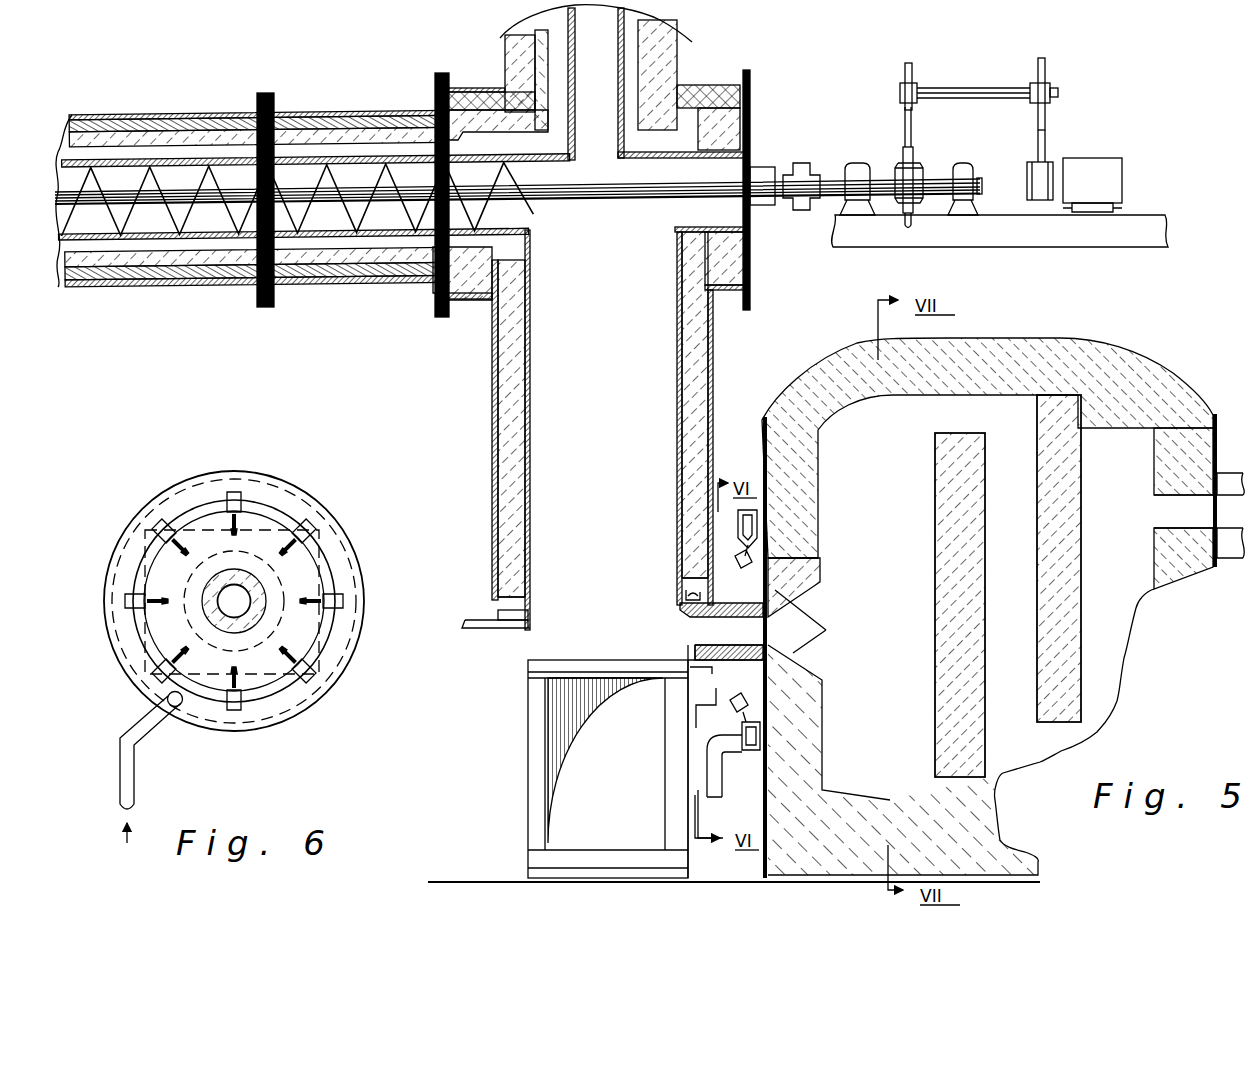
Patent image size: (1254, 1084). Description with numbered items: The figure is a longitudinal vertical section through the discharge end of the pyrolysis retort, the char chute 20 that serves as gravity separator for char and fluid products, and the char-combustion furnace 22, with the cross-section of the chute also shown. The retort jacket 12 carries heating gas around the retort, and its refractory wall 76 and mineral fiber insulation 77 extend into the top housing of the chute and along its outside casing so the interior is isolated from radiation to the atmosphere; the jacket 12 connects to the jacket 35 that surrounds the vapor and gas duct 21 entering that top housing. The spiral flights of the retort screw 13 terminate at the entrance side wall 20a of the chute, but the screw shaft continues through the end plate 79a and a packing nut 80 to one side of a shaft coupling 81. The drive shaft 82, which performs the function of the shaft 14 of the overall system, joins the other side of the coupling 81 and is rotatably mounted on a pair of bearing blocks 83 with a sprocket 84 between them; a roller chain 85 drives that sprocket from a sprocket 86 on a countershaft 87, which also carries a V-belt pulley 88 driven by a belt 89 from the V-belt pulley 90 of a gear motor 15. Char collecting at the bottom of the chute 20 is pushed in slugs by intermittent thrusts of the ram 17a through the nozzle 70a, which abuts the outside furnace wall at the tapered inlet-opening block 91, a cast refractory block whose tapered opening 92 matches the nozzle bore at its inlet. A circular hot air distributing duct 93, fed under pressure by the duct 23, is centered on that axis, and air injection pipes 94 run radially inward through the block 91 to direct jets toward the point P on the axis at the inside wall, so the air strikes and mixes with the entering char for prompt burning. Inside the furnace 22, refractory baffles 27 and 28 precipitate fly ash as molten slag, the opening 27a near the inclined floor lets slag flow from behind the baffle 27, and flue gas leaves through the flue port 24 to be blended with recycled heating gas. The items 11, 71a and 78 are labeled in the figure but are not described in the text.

In FIG. 5, the feed conduit 11 is at (70, 153).
In FIG. 5, the retort jacket 12 is at (302, 150).
In FIG. 5, the retort screw 13 is at (370, 217).
In FIG. 5, the shaft 14 is at (634, 199).
In FIG. 5, the gear motor 15 is at (1120, 163).
In FIG. 5, the ram 17a is at (487, 638).
In FIG. 5, the char chute 20 is at (612, 443).
In FIG. 5, the entrance side wall 20a is at (530, 310).
In FIG. 5, the vapor and gas duct 21 is at (610, 91).
In FIG. 5, the furnace 22 is at (902, 576).
In FIG. 5, the duct 23 is at (713, 765).
In FIG. 6, the duct 23 is at (125, 733).
In FIG. 5, the flue port 24 is at (1180, 515).
In FIG. 5, the refractory baffle 27 is at (978, 482).
In FIG. 5, the opening 27a is at (940, 787).
In FIG. 5, the refractory baffle 28 is at (1040, 600).
In FIG. 5, the jacket 35 is at (557, 58).
In FIG. 5, the nozzle 70a is at (693, 622).
In FIG. 6, the nozzle 70a is at (295, 510).
In FIG. 5, the bracket 71a is at (686, 592).
In FIG. 5, the refractory wall 76 is at (105, 289).
In FIG. 5, the mineral fiber insulation 77 is at (152, 126).
In FIG. 5, the refractory layer 78 is at (205, 115).
In FIG. 5, the end plate 79a is at (752, 108).
In FIG. 5, the packing nut 80 is at (765, 167).
In FIG. 5, the shaft coupling 81 is at (800, 165).
In FIG. 5, the drive shaft 82 is at (830, 180).
In FIG. 5, the bearing blocks 83 is at (845, 200).
In FIG. 5, the sprocket 84 is at (912, 172).
In FIG. 5, the roller chain 85 is at (912, 128).
In FIG. 5, the sprocket 86 is at (912, 75).
In FIG. 5, the countershaft 87 is at (965, 90).
In FIG. 5, the V-belt pulley 88 is at (1048, 82).
In FIG. 5, the belt 89 is at (1045, 140).
In FIG. 5, the V-belt pulley 90 is at (1045, 200).
In FIG. 5, the tapered furnace inlet-opening block 91 is at (812, 583).
In FIG. 6, the tapered furnace inlet-opening block 91 is at (247, 527).
In FIG. 5, the tapered opening 92 is at (820, 678).
In FIG. 5, the circular hot air distributing duct 93 is at (770, 520).
In FIG. 6, the circular hot air distributing duct 93 is at (165, 492).
In FIG. 5, the air injection pipes 94 is at (760, 560).
In FIG. 6, the air injection pipes 94 is at (155, 595).
In FIG. 5, the point P is at (808, 621).